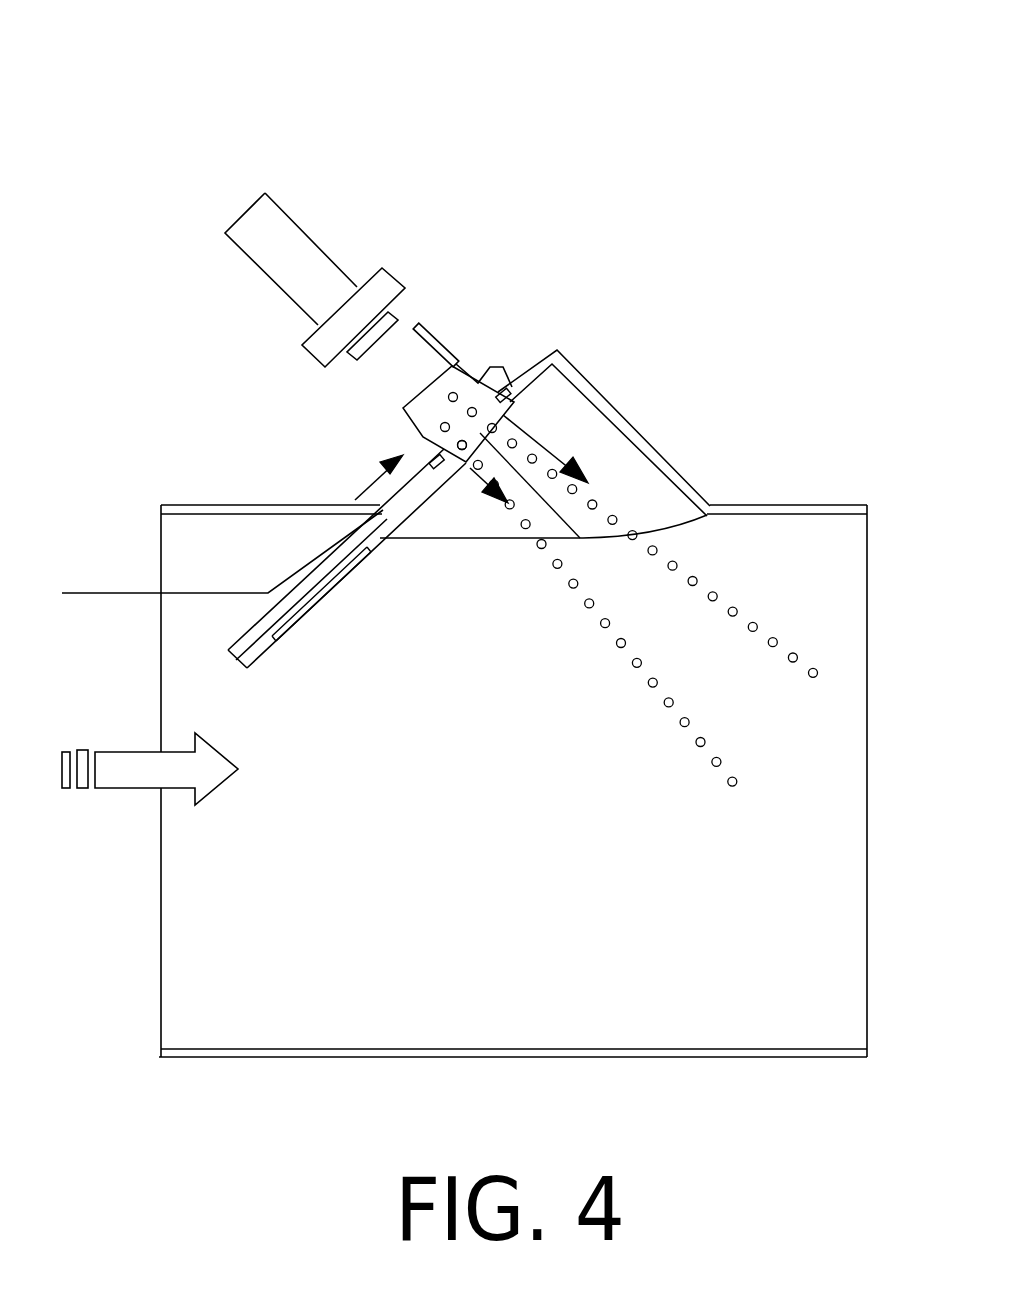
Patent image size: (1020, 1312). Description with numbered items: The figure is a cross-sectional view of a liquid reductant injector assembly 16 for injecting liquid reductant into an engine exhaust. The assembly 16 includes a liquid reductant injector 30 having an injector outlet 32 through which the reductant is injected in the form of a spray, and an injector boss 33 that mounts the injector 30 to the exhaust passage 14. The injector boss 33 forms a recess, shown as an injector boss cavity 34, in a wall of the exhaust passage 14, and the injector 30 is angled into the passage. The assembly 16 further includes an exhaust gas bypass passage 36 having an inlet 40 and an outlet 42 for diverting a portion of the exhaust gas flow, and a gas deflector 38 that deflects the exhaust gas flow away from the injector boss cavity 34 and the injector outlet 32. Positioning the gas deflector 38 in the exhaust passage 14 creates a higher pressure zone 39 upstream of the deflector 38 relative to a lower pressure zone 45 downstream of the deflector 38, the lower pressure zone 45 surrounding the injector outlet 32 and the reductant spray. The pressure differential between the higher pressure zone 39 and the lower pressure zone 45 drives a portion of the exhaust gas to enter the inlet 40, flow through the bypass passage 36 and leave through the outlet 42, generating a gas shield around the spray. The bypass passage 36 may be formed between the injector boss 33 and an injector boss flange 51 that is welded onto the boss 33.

The exhaust passage 14 is at (362, 900).
The liquid reductant injector assembly 16 is at (620, 130).
The liquid reductant injector 30 is at (290, 212).
The injector outlet 32 is at (493, 427).
The injector boss 33 is at (576, 366).
The injector boss cavity 34 is at (645, 505).
The exhaust gas bypass passage 36 is at (408, 490).
The gas deflector 38 is at (277, 658).
The higher pressure zone 39 is at (134, 572).
The inlet 40 is at (387, 522).
The outlet 42 is at (508, 395).
The lower pressure zone 45 is at (547, 695).
The injector boss flange 51 is at (496, 367).